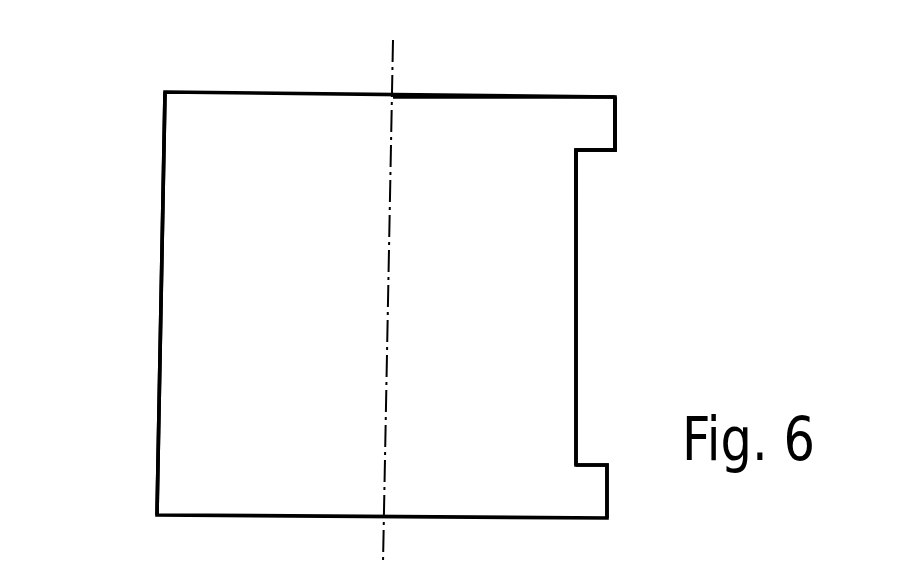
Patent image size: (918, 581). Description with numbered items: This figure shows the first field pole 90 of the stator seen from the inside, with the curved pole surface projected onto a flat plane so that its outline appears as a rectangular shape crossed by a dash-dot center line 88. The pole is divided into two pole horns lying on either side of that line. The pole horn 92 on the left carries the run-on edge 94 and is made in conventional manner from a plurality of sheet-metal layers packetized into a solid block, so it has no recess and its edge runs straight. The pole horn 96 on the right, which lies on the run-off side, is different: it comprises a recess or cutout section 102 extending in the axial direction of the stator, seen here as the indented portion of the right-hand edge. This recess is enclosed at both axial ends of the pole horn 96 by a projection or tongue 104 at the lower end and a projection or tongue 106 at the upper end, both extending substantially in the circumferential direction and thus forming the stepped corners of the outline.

The center axis line 88 is at (482, 281).
The first field pole 90 is at (423, 147).
The pole horn 92 is at (386, 263).
The run-on edge 94 is at (183, 288).
The pole horn 96 is at (523, 177).
The recess or cutout section 102 is at (582, 302).
The projection or tongue 104 is at (587, 487).
The projection or tongue 106 is at (597, 132).